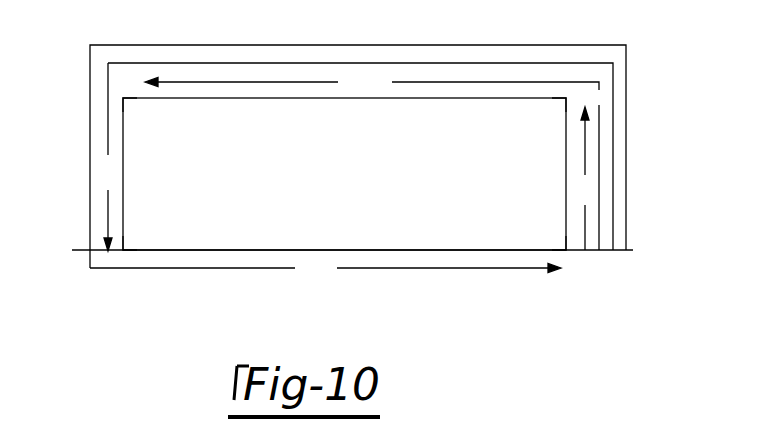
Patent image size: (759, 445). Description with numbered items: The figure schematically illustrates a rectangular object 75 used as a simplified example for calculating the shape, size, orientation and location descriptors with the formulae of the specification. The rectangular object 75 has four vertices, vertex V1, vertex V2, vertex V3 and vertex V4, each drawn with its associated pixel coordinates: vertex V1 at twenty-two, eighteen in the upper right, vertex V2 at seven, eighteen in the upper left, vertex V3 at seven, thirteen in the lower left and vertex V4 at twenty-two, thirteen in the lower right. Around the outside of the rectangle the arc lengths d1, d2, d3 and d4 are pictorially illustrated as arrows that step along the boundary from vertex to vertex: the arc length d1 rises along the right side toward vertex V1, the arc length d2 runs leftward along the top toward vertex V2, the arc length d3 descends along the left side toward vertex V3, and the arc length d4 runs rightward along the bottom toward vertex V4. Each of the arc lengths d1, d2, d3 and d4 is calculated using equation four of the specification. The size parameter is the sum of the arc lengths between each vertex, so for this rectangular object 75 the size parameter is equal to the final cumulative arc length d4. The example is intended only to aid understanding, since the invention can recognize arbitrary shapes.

The rectangular object 75 is at (485, 250).
The arc length d1 is at (582, 178).
The arc length d2 is at (372, 160).
The arc length d3 is at (109, 157).
The arc length d4 is at (325, 270).
The vertex v1 V1 is at (616, 97).
The vertex v2 V2 is at (96, 97).
The vertex v3 V3 is at (106, 269).
The vertex v4 V4 is at (616, 261).